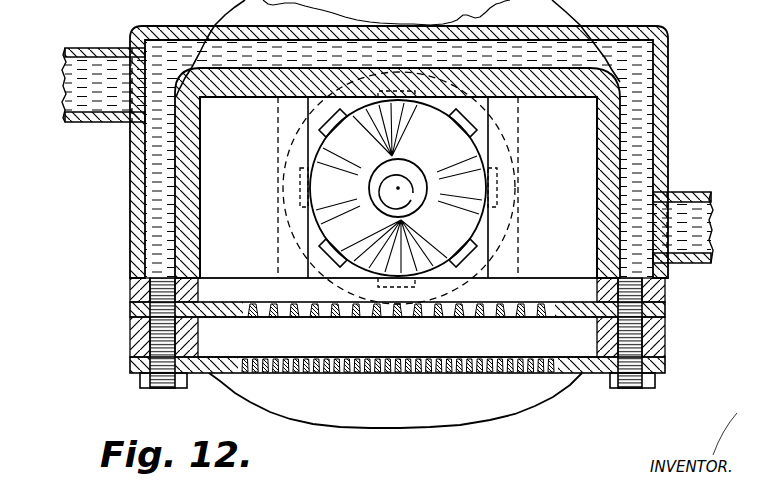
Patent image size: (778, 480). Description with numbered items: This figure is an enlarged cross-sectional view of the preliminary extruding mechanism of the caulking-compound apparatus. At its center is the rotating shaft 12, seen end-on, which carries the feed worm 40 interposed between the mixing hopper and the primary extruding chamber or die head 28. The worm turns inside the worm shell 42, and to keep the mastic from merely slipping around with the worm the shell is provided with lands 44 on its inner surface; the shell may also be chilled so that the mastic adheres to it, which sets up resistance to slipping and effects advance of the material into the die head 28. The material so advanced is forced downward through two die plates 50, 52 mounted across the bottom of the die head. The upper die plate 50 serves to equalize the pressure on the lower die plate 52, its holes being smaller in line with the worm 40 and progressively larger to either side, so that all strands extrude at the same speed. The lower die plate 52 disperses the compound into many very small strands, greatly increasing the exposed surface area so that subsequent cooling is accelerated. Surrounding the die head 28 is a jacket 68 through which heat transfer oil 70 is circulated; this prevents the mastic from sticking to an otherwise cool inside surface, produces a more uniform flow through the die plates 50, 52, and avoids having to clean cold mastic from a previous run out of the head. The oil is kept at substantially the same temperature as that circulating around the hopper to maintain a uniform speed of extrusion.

The rotating shaft 12 is at (410, 188).
The primary extruding chamber or die head 28 is at (582, 170).
The feed worm 40 is at (467, 223).
The worm shell 42 is at (516, 141).
The lands 44 is at (482, 137).
The die plate 50 is at (465, 320).
The lower die plate 52 is at (450, 377).
The jacket 68 is at (668, 53).
The heat transfer oil 70 is at (640, 103).